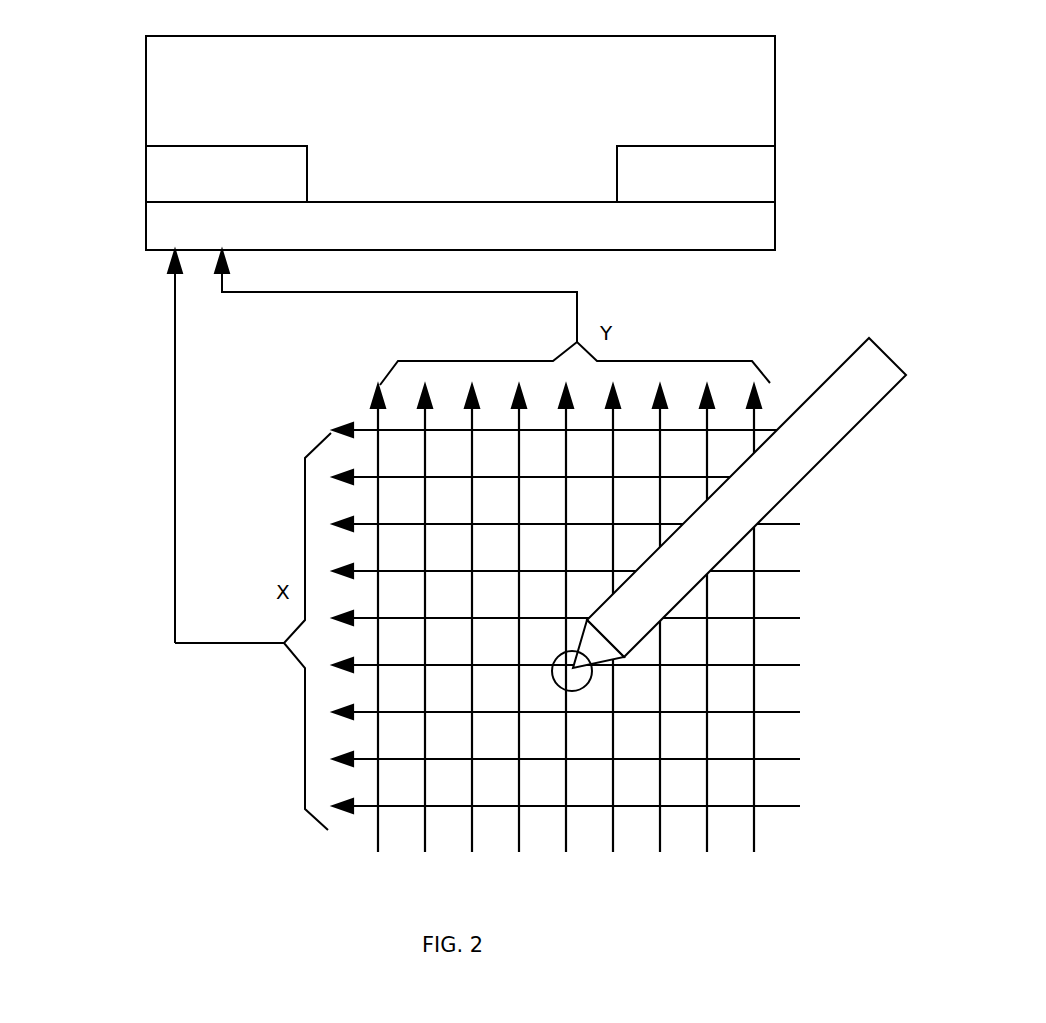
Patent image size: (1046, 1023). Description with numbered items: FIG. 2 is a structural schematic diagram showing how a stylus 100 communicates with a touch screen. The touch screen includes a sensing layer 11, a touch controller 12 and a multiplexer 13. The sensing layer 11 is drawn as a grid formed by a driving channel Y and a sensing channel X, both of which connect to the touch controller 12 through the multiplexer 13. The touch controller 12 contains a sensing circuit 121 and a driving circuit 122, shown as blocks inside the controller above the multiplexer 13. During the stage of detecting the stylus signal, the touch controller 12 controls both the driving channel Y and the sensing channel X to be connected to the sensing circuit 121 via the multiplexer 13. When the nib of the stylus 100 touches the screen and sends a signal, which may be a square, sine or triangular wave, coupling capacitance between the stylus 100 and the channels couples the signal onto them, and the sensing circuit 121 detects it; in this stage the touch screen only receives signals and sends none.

The sensing layer 11 is at (755, 833).
The touch controller 12 is at (775, 75).
The sensing circuit 121 is at (153, 153).
The driving circuit 122 is at (768, 183).
The multiplexer 13 is at (755, 240).
The stylus 100 is at (873, 410).